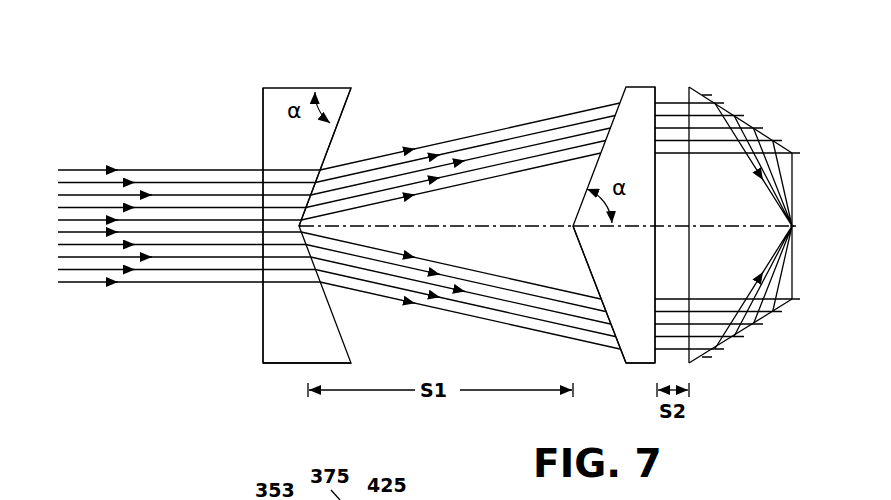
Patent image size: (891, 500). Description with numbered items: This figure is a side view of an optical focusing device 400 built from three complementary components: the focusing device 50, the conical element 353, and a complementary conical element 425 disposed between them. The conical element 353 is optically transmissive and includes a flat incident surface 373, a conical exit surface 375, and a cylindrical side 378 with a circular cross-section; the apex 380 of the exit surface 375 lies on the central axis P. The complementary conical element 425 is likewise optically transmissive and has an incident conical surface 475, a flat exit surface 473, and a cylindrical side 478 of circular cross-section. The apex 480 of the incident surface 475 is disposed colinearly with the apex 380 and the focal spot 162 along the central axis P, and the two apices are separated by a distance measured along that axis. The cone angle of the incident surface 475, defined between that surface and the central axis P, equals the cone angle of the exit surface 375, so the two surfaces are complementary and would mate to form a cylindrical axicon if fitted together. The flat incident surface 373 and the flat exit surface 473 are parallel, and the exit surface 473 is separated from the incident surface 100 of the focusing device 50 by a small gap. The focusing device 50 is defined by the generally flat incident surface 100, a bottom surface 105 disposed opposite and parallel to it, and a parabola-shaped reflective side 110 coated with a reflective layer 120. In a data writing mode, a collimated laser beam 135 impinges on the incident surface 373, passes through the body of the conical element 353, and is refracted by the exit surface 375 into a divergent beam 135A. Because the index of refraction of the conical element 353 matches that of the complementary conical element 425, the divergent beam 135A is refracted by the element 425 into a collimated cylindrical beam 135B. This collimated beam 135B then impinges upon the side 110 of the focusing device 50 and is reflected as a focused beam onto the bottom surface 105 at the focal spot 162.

The focusing device 400 is at (479, 21).
The collimated laser beam 135 is at (157, 170).
The divergent beam 135A is at (470, 118).
The collimated cylindrical beam 135B is at (765, 220).
The conical element 353 is at (294, 86).
The flat incident surface 373 is at (263, 110).
The conical exit surface 375 is at (337, 122).
The cylindrical side 378 is at (272, 363).
The apex 380 is at (325, 224).
The complementary conical element 425 is at (632, 84).
The flat exit surface 473 is at (655, 364).
The incident conical surface 475 is at (596, 289).
The cylindrical side 478 is at (627, 363).
The apex 480 is at (573, 227).
The central axis P is at (515, 226).
The focusing device 50 is at (748, 102).
The reflective side 110 is at (760, 128).
The incident surface 100 is at (690, 363).
The reflective layer 120 is at (746, 328).
The bottom surface 105 is at (795, 294).
The focal spot 162 is at (795, 226).